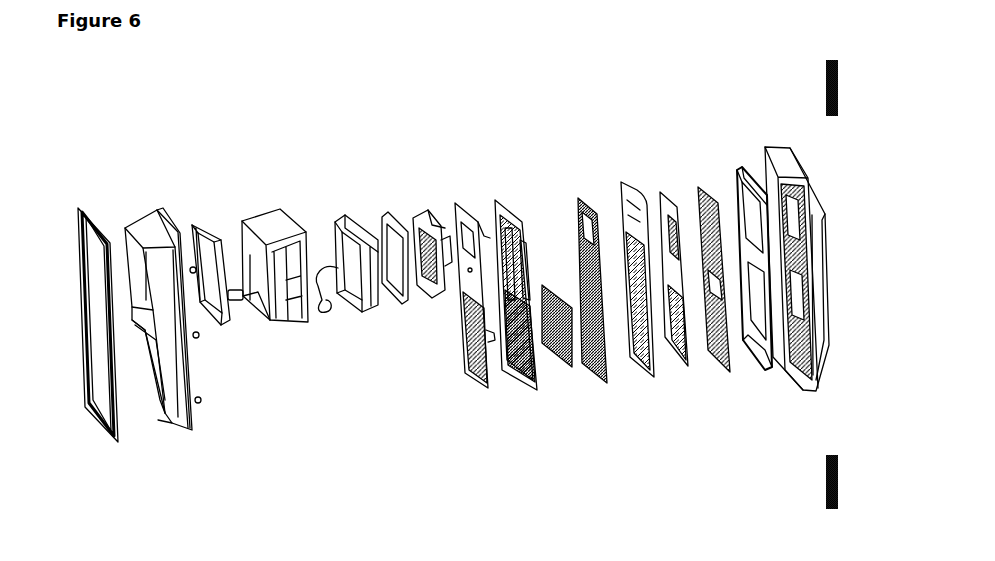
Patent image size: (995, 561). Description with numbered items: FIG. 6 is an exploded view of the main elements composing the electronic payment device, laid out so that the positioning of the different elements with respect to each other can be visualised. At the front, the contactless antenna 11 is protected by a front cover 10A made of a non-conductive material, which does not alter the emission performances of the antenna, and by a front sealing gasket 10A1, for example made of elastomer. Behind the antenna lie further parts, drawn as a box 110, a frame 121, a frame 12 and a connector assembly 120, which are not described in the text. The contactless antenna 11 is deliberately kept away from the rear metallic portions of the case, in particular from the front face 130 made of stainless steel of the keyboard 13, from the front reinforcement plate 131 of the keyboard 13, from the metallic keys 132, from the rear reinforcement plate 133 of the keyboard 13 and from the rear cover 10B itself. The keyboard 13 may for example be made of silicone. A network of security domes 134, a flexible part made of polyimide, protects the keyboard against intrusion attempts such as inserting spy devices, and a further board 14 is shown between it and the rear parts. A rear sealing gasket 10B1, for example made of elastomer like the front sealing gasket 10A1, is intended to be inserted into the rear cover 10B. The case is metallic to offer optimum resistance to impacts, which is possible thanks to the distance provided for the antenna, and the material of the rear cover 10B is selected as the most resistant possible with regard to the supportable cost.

The front sealing gasket 10A1 is at (80, 206).
The front cover 10A is at (175, 427).
The contactless antenna 11 is at (223, 333).
The box 110 is at (262, 214).
The frame 121 is at (343, 214).
The frame 12 is at (385, 216).
The connector assembly 120 is at (437, 300).
The front face 130 is at (456, 203).
The front reinforcement plate 131 is at (525, 392).
The metallic keys 132 is at (546, 283).
The keyboard 13 is at (606, 388).
The rear reinforcement plate 133 is at (637, 186).
The network of security domes 134 is at (686, 370).
The circuit board 14 is at (729, 368).
The rear sealing gasket 10B1 is at (740, 164).
The rear cover 10B is at (813, 395).